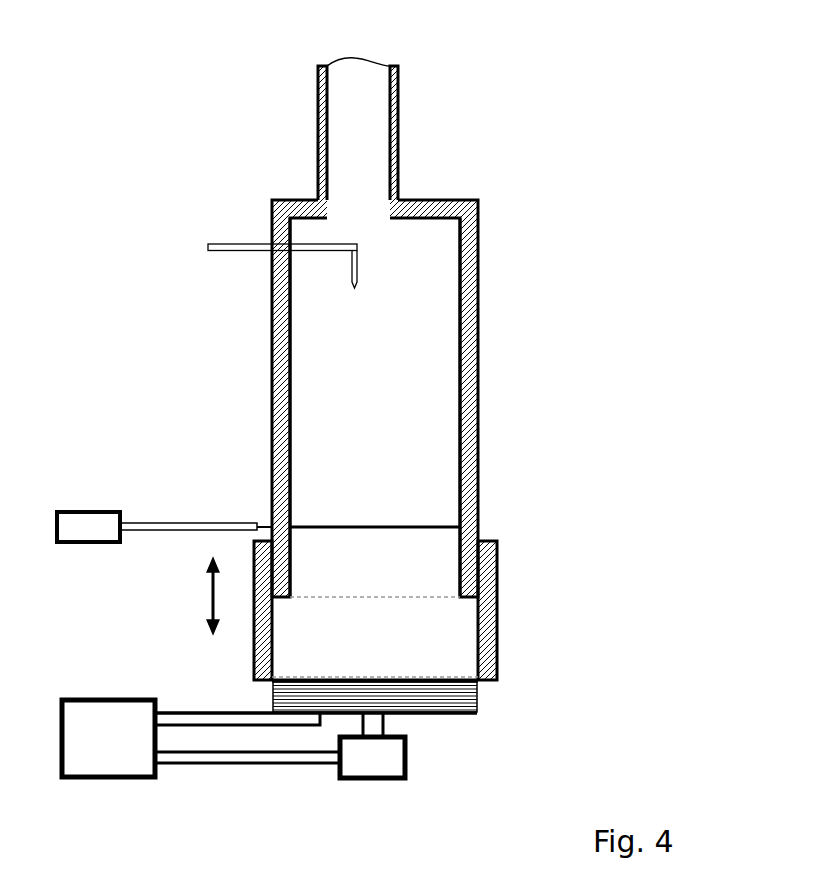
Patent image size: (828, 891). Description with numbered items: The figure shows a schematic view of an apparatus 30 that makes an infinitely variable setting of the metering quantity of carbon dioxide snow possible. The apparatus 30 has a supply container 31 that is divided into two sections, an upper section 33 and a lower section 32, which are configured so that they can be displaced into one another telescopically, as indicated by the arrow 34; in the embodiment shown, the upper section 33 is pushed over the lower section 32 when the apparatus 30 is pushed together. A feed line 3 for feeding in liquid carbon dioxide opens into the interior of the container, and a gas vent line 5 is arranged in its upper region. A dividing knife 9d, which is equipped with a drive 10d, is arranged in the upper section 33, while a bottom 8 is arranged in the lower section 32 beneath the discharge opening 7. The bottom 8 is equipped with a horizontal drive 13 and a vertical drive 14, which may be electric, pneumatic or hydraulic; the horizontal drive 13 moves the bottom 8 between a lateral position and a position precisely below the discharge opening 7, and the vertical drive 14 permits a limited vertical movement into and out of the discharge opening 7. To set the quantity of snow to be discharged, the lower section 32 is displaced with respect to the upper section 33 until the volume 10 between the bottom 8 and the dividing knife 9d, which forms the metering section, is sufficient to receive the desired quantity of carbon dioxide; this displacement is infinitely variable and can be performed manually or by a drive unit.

The apparatus 30 is at (168, 113).
The gas vent line 5 is at (400, 88).
The supply container 31 is at (479, 317).
The upper section 33 is at (478, 423).
The feed line 3 is at (232, 251).
The dividing knife 9d is at (418, 527).
The sample chamber 10 is at (388, 584).
The drive 10d is at (100, 525).
The arrow 34 is at (210, 602).
The lower section 32 is at (497, 603).
The discharge opening 7 is at (363, 677).
The bottom 8 is at (420, 702).
The horizontal drive 13 is at (120, 751).
The vertical drive 14 is at (386, 773).